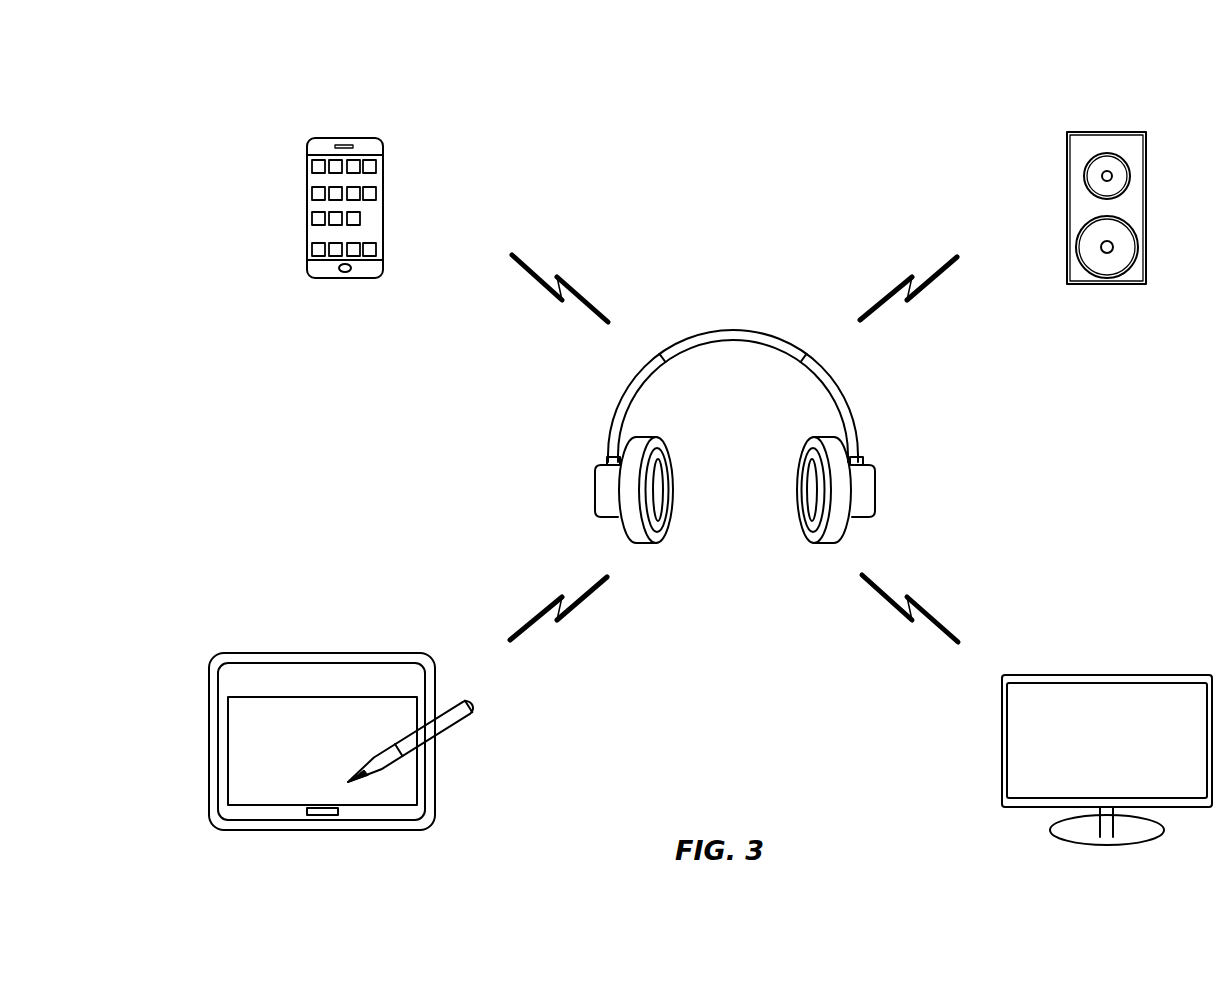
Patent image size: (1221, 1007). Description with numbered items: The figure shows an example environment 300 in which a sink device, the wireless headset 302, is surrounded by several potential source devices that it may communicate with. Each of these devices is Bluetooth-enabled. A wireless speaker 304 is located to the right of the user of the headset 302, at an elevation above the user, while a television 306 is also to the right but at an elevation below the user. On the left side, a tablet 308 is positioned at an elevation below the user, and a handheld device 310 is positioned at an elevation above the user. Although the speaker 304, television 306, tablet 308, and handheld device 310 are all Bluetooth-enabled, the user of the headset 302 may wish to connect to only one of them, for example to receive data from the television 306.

The environment 300 is at (258, 86).
The wireless headset 302 is at (737, 330).
The wireless speaker 304 is at (1110, 132).
The television 306 is at (1140, 675).
The tablet 308 is at (330, 653).
The handheld device 310 is at (352, 138).